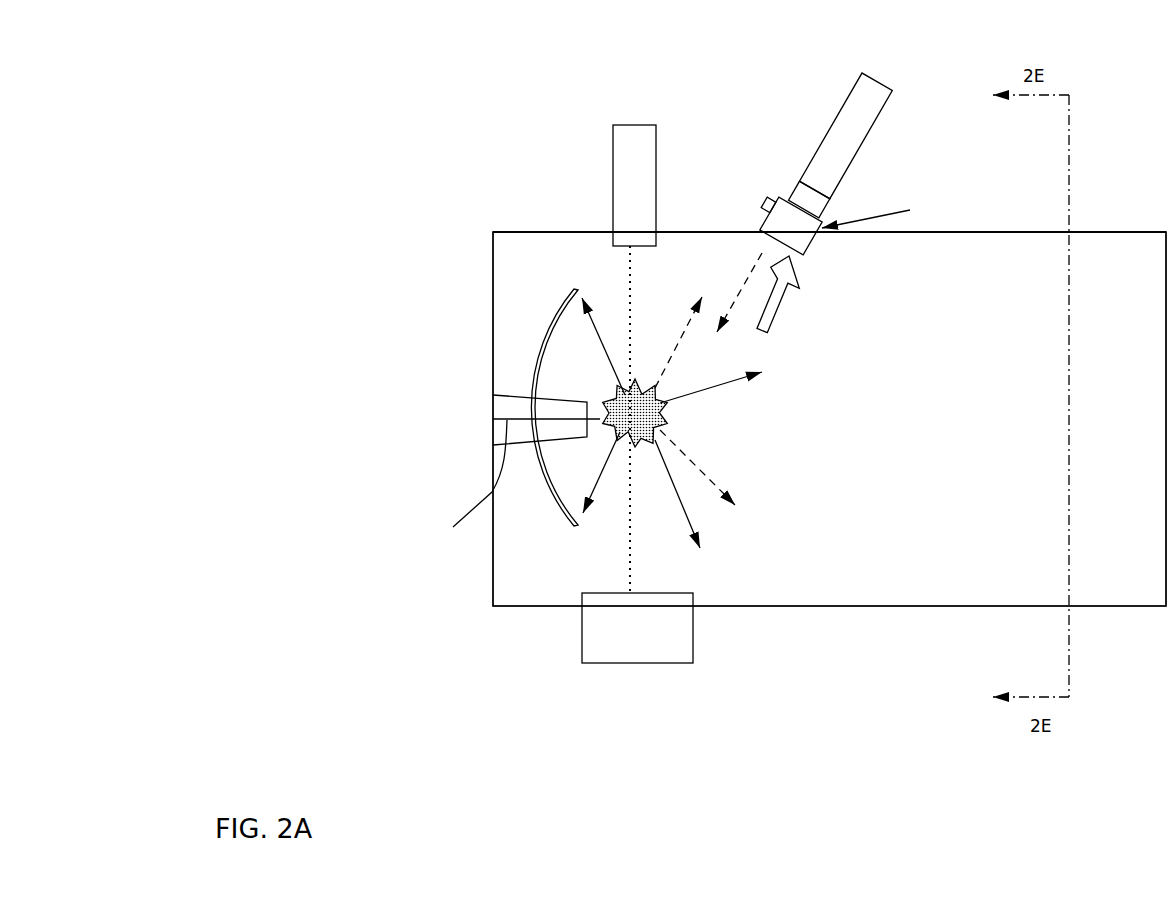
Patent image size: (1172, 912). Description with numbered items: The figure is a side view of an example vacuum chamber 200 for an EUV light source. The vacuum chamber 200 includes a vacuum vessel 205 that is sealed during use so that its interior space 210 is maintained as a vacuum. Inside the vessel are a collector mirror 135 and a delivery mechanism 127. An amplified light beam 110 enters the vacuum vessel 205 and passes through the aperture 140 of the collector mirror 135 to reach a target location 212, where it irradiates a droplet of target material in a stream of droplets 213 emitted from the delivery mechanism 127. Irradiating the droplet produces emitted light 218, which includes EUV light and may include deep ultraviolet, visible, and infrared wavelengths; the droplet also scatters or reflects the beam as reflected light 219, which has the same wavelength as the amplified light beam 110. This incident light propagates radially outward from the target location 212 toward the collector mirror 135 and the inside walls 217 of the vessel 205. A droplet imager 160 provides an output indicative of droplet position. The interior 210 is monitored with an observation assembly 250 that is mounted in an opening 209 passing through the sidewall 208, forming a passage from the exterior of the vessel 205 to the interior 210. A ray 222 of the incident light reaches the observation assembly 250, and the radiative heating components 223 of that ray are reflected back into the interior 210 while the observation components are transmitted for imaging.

The vacuum chamber 200 is at (508, 102).
The amplified light beam 110 is at (467, 488).
The delivery mechanism 127 is at (656, 148).
The collector mirror 135 is at (555, 322).
The aperture 140 is at (528, 404).
The droplet imager 160 is at (582, 640).
The vacuum vessel 205 is at (892, 645).
The sidewall 208 is at (993, 228).
The opening 209 is at (883, 212).
The interior space 210 is at (829, 419).
The target location 212 is at (635, 413).
The stream of droplets 213 is at (625, 300).
The inside walls 217 is at (972, 235).
The emitted light 218 is at (730, 382).
The reflected light 219 is at (716, 477).
The ray 222 is at (783, 297).
The radiative heating components 223 is at (740, 290).
The observation assembly 250 is at (878, 143).